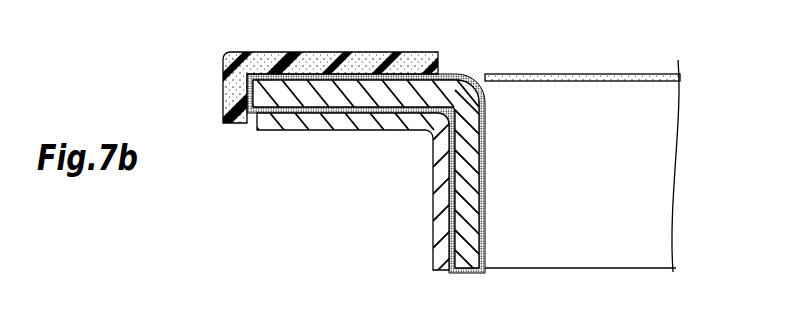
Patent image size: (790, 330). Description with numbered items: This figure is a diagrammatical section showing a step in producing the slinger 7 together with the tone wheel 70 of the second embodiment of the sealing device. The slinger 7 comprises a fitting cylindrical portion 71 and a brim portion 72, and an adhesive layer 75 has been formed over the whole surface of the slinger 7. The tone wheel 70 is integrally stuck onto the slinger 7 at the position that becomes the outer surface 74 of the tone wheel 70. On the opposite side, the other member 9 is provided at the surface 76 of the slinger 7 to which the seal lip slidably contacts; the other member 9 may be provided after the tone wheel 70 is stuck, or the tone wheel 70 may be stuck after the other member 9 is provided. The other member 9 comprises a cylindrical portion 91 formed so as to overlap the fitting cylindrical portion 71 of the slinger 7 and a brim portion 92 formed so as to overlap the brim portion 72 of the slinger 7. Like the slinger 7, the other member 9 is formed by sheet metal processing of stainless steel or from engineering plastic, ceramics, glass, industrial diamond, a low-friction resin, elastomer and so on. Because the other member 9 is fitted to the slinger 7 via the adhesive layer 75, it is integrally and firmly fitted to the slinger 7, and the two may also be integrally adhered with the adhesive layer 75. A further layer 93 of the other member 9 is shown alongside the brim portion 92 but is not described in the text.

The slinger 7 is at (314, 209).
The fitting cylindrical portion 71 is at (457, 162).
The brim portion 72 is at (270, 113).
The other member 9 is at (347, 200).
The cylindrical portion 91 is at (433, 233).
The brim portion 92 is at (327, 117).
The third layer 93 is at (432, 190).
The tone wheel 70 is at (330, 62).
The outer surface 74 is at (308, 74).
The adhesive layer 75 is at (388, 78).
The surface 76 is at (363, 146).